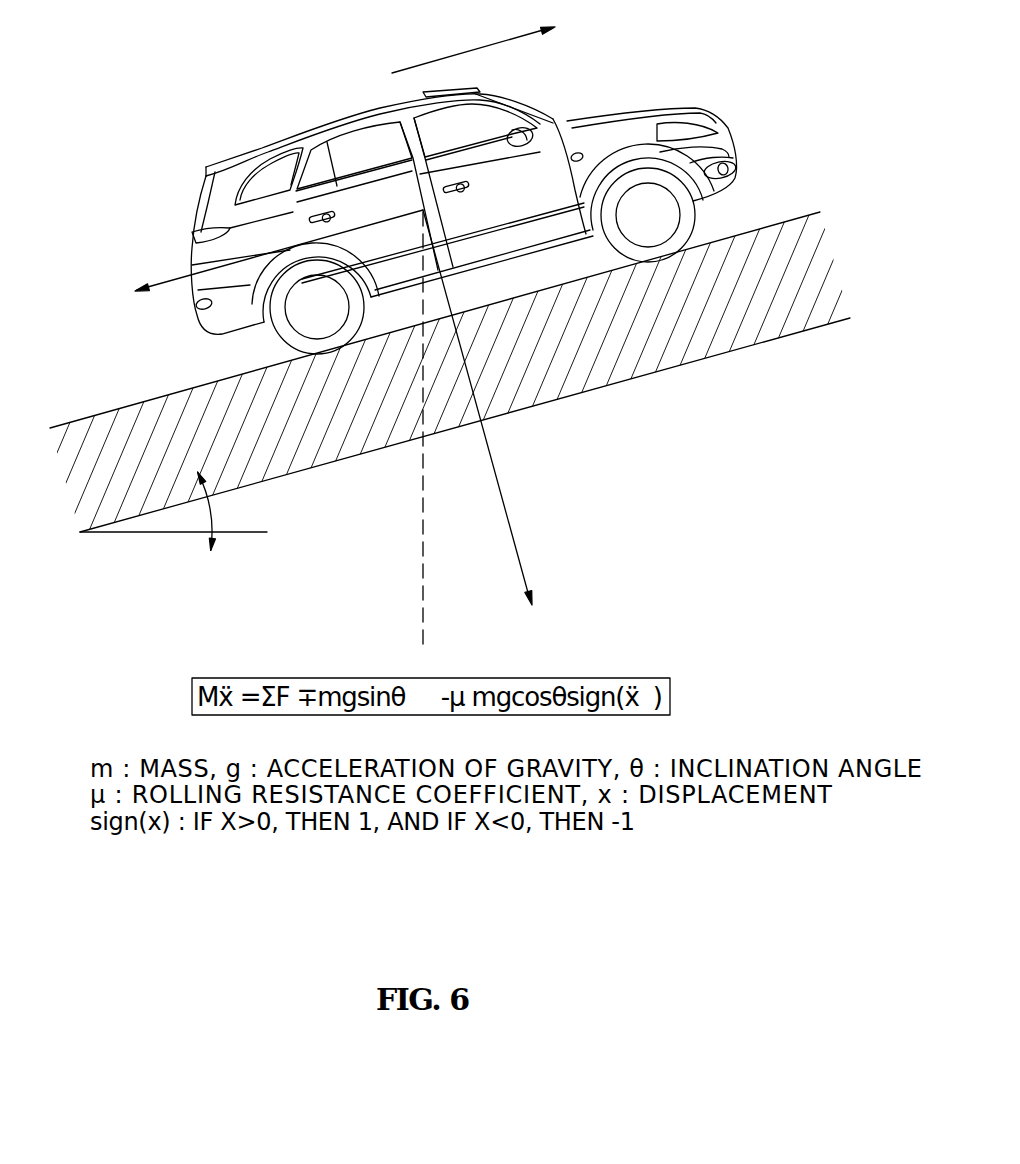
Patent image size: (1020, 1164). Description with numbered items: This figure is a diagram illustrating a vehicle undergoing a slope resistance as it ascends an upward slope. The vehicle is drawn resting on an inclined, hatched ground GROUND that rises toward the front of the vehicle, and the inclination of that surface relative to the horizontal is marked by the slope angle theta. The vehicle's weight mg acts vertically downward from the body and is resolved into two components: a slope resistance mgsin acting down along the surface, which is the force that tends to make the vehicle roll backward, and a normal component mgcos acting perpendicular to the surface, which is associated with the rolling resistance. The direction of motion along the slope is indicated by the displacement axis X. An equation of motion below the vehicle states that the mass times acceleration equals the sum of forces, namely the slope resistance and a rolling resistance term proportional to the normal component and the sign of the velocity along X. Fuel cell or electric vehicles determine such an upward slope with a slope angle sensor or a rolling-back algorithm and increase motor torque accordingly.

The ground GROUND is at (480, 300).
The slope angle theta is at (173, 511).
The slope resistance mgsin is at (225, 257).
The normal weight component mgcos is at (499, 423).
The gravitational force mg is at (416, 442).
The displacement direction X is at (483, 42).